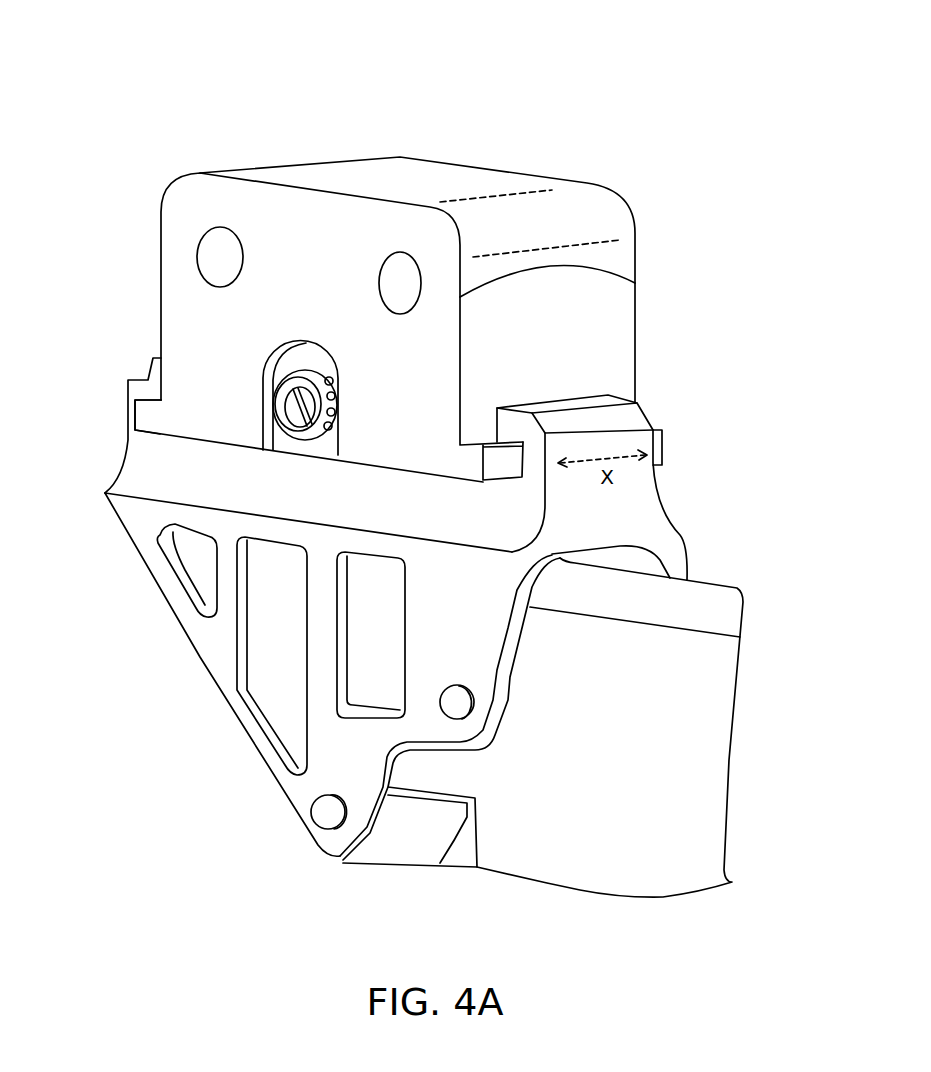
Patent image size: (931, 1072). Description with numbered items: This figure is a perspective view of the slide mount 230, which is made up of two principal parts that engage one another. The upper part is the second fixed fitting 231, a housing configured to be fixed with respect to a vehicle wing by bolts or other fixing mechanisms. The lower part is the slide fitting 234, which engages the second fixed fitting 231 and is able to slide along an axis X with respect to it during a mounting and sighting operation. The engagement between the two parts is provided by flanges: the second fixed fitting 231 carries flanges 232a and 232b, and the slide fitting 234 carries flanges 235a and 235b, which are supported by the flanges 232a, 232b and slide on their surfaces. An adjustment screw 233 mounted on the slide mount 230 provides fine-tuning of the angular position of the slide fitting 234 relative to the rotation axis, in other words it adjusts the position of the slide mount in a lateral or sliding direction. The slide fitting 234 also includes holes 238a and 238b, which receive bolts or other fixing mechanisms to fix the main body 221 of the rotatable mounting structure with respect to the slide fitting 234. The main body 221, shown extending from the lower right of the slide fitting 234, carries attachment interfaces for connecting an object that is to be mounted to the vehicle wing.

The slide mount 230 is at (495, 75).
The second fixed fitting 231 is at (560, 203).
The adjustment screw 233 is at (273, 365).
The flange 235b is at (148, 378).
The flange 232b is at (147, 418).
The flange 235a is at (513, 420).
The flange 232a is at (468, 463).
The slide fitting 234 is at (158, 563).
The hole 238a is at (450, 700).
The hole 238b is at (328, 807).
The main body 221 is at (720, 708).